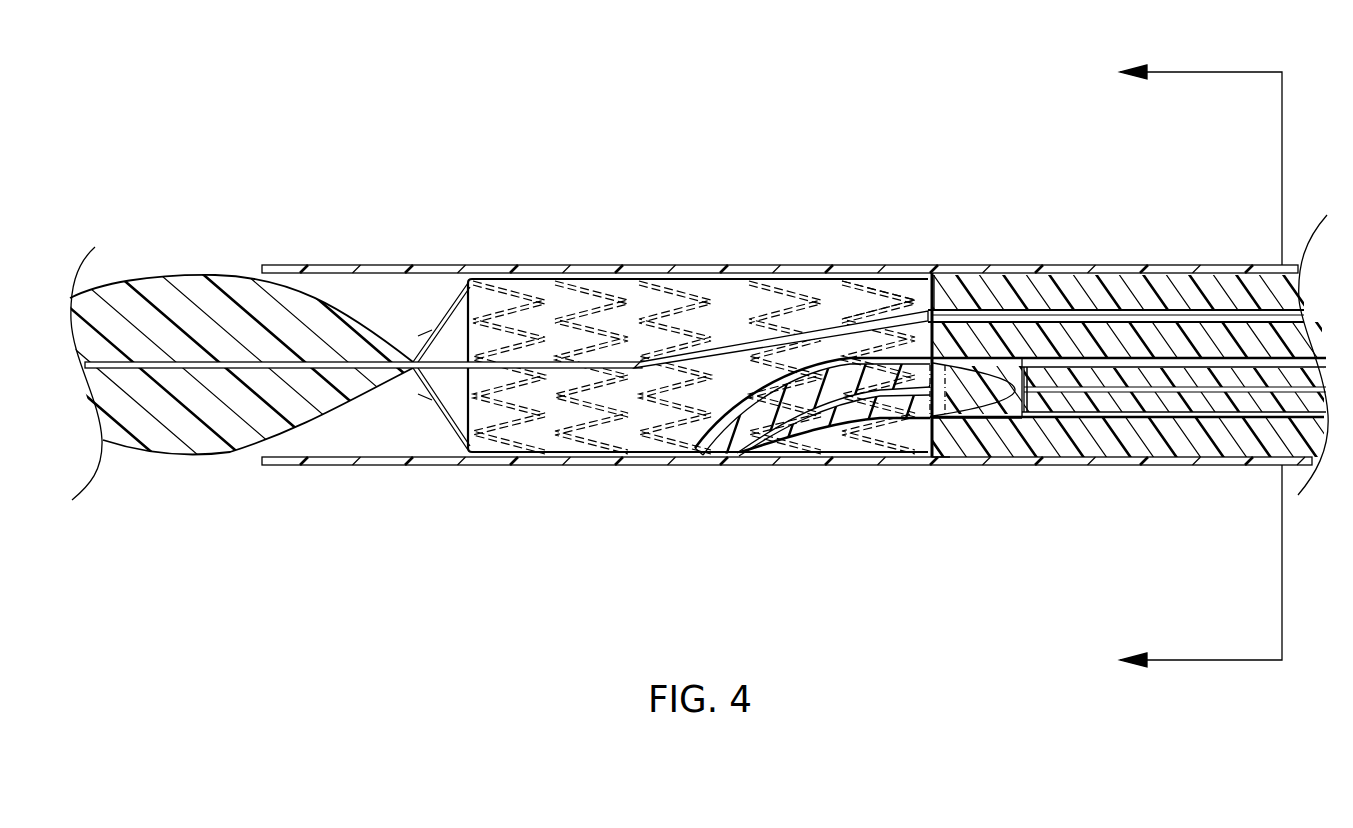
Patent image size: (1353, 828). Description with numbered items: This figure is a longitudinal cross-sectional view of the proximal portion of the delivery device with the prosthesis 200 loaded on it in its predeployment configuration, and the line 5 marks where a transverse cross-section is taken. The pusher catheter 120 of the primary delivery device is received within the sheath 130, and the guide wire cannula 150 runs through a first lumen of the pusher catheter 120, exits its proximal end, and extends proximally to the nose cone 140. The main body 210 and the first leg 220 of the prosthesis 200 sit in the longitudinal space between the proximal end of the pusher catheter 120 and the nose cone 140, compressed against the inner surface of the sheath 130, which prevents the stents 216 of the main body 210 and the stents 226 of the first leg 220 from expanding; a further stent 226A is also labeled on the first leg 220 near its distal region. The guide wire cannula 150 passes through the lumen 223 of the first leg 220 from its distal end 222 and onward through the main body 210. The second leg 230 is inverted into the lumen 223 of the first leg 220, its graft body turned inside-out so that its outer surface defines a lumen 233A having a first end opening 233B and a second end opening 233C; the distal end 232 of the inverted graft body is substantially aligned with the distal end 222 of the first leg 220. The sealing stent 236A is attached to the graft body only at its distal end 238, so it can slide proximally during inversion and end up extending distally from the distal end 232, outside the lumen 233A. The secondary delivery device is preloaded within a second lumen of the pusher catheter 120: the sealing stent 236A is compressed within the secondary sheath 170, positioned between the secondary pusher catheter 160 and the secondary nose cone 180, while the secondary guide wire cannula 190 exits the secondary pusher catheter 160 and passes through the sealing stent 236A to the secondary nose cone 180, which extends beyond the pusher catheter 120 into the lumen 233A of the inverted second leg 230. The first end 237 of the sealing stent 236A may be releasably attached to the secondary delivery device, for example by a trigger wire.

The pusher catheter 120 is at (1167, 290).
The sheath 130 is at (365, 265).
The nose cone 140 is at (160, 290).
The guide wire cannula 150 is at (686, 355).
The secondary pusher catheter 160 is at (1197, 403).
The secondary sheath 170 is at (1023, 410).
The secondary nose cone 180 is at (774, 430).
The secondary guide wire cannula 190 is at (998, 420).
The prosthesis 200 is at (592, 280).
The main body 210 is at (587, 450).
The stents 216 is at (620, 295).
The first leg 220 is at (858, 302).
The distal end 222 is at (936, 300).
The lumen 223 is at (870, 290).
The stents 226 is at (759, 290).
The proximal stent apex 226A is at (888, 285).
The second leg 230 is at (890, 430).
The distal end 232 is at (958, 365).
The lumen 233A is at (745, 440).
The first end opening 233B is at (905, 425).
The second end opening 233C is at (692, 440).
The sealing stent 236A is at (1053, 413).
The first end 237 is at (1010, 350).
The distal end 238 is at (932, 462).
The line 5- 5 is at (1186, 367).